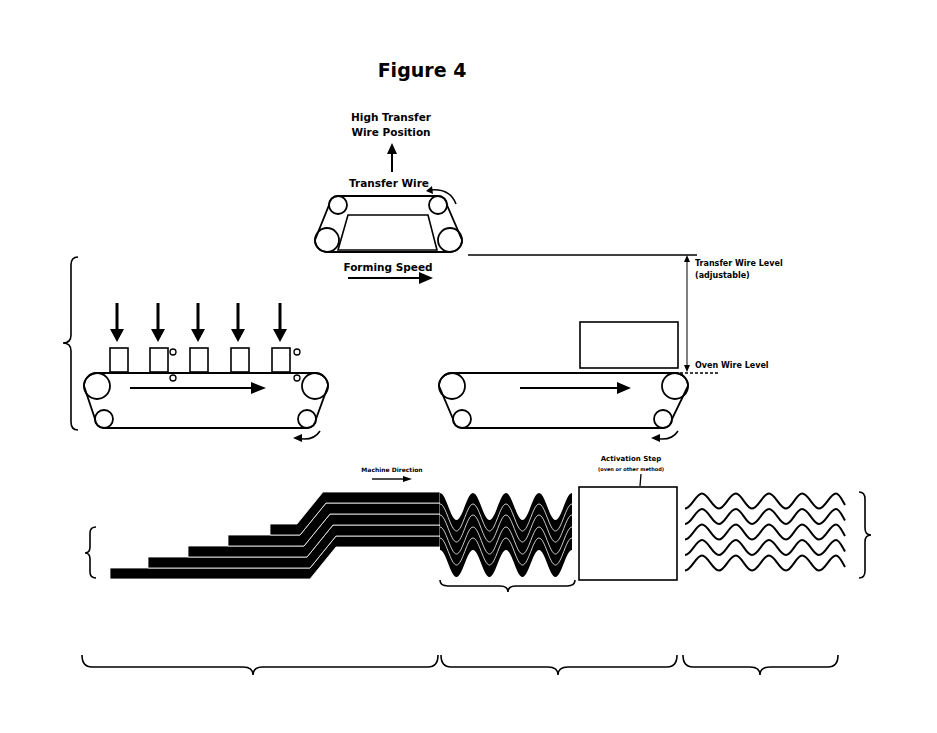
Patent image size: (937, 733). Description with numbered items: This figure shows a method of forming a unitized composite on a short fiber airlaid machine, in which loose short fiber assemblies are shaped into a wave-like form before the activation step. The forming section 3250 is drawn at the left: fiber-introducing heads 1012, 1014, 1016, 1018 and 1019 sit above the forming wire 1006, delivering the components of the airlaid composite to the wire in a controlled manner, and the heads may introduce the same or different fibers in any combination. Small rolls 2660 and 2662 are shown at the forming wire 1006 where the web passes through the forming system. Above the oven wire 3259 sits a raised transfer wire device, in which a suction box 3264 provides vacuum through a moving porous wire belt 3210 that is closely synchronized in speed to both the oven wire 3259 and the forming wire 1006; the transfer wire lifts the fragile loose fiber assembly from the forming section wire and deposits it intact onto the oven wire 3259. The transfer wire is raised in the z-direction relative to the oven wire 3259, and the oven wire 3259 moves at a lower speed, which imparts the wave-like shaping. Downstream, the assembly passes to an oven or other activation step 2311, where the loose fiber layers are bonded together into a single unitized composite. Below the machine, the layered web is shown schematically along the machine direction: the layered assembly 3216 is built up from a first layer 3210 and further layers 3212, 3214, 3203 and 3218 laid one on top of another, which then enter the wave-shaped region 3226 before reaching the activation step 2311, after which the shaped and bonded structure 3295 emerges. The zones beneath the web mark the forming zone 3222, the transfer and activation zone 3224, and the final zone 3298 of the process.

The moving porous wire belt 3210 is at (460, 222).
The suction box 3264 is at (353, 230).
The forming section 3250 is at (49, 343).
The fiber-introducing head 1012 is at (112, 355).
The fiber-introducing head 1014 is at (152, 365).
The fiber-introducing head 1016 is at (196, 355).
The fiber-introducing head 1018 is at (226, 365).
The fifth headbox 1019 is at (277, 357).
The first roll 2660 is at (175, 349).
The second roll 2662 is at (300, 350).
The forming wire 1006 is at (185, 430).
The oven or other activation step 2311 is at (634, 340).
The oven wire 3259 is at (551, 430).
The layered web 3216 is at (74, 552).
The second layer 3212 is at (165, 580).
The third layer 3214 is at (211, 580).
The fourth layer 3203 is at (252, 580).
The fifth layer 3218 is at (289, 580).
The corrugated web section 3226 is at (507, 553).
The separated corrugated layers 3295 is at (799, 535).
The forming zone 3222 is at (260, 676).
The transfer / activation zone 3224 is at (559, 676).
The separation zone 3298 is at (760, 676).